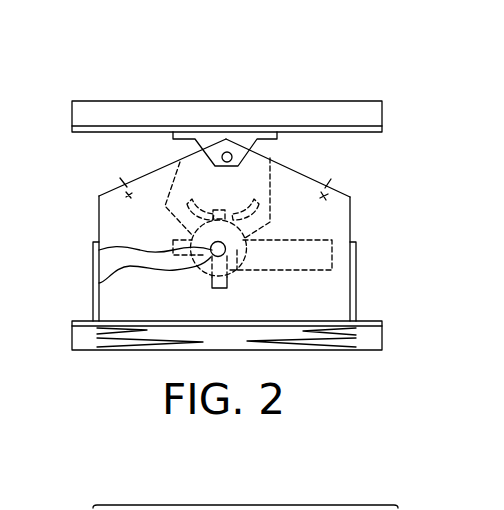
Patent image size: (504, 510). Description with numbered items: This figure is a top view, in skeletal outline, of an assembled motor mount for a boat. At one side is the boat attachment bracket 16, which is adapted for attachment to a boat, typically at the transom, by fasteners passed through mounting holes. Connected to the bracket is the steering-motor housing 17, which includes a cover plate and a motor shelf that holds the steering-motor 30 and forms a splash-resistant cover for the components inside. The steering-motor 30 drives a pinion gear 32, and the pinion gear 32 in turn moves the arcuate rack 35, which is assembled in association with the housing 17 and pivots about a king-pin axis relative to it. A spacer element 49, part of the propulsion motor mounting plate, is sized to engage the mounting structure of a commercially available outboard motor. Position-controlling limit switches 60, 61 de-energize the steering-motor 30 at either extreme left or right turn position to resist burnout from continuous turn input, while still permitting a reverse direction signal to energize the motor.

The boat attachment bracket 16 is at (365, 321).
The steering-motor housing 17 is at (318, 233).
The steering-motor 30 is at (93, 284).
The pinion gear 32 is at (93, 252).
The arcuate rack 35 is at (210, 196).
The spacer element 49 is at (366, 114).
The limit switch 60 is at (128, 191).
The limit switch 61 is at (340, 197).